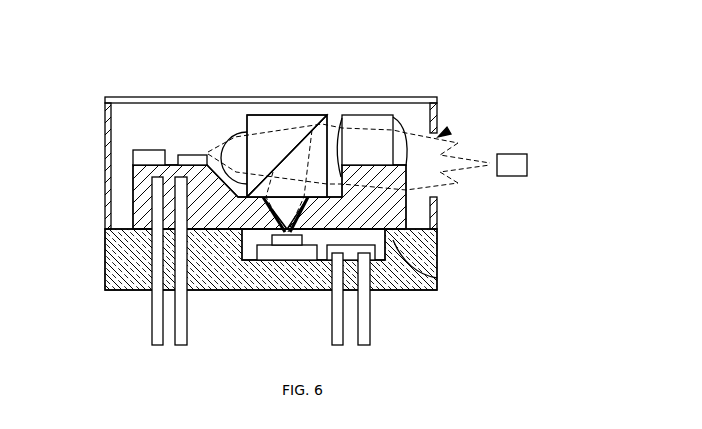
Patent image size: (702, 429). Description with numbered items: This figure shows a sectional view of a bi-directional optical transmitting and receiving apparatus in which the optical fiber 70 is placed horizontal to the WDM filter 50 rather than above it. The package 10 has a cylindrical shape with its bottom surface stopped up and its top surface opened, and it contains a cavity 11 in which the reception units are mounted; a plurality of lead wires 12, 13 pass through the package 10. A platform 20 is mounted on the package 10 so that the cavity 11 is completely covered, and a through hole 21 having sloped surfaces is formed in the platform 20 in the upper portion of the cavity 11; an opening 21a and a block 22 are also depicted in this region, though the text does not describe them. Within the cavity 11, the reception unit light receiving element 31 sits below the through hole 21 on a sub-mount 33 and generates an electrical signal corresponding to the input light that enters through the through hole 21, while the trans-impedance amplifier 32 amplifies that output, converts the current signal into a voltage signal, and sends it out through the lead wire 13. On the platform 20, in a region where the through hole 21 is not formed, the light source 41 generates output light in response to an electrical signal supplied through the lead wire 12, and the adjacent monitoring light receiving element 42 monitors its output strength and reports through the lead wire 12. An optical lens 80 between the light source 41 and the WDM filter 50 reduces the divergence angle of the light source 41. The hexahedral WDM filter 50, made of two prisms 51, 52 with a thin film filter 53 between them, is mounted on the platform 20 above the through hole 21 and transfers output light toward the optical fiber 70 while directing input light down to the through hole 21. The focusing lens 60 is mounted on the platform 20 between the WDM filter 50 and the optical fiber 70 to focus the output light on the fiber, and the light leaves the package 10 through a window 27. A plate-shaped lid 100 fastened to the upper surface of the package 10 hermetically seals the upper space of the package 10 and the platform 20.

The package 10 is at (437, 262).
The cavity 11 is at (437, 278).
The lead wire 12 is at (152, 322).
The lead wire 13 is at (368, 322).
The platform 20 is at (133, 186).
The through hole 21 is at (300, 214).
The aperture 21a is at (238, 231).
The mount block 22 is at (228, 192).
The window 27 is at (446, 133).
The reception unit light receiving element 31 is at (286, 260).
The trans-impedance amplifier 32 is at (322, 260).
The sub-mount 33 is at (268, 258).
The light source 41 is at (193, 155).
The monitoring light receiving element 42 is at (150, 149).
The WDM filter 50 is at (287, 105).
The prism 51 is at (246, 114).
The prism 52 is at (330, 116).
The thin film filter 53 is at (326, 50).
The focusing lens 60 is at (370, 118).
The optical fiber 70 is at (527, 165).
The optical lens 80 is at (227, 131).
The lid 100 is at (407, 97).